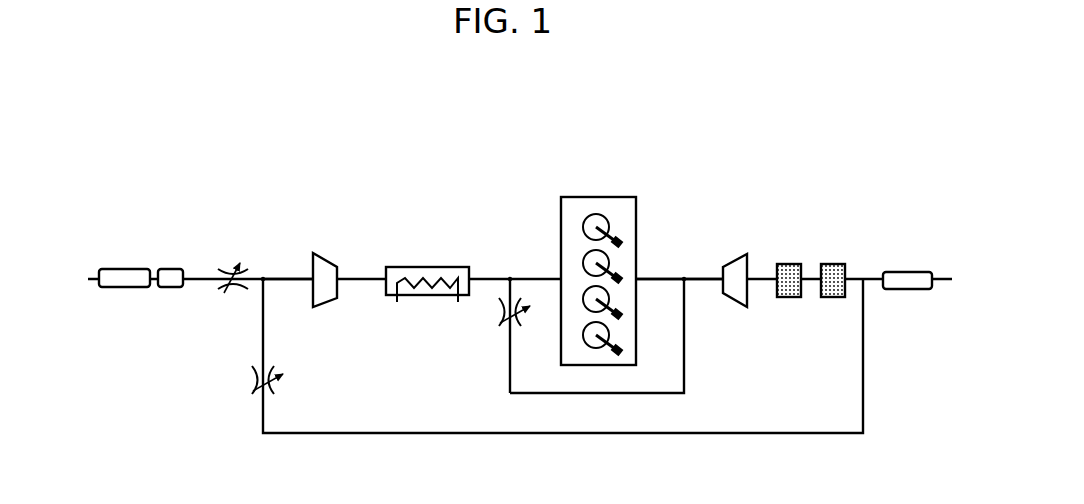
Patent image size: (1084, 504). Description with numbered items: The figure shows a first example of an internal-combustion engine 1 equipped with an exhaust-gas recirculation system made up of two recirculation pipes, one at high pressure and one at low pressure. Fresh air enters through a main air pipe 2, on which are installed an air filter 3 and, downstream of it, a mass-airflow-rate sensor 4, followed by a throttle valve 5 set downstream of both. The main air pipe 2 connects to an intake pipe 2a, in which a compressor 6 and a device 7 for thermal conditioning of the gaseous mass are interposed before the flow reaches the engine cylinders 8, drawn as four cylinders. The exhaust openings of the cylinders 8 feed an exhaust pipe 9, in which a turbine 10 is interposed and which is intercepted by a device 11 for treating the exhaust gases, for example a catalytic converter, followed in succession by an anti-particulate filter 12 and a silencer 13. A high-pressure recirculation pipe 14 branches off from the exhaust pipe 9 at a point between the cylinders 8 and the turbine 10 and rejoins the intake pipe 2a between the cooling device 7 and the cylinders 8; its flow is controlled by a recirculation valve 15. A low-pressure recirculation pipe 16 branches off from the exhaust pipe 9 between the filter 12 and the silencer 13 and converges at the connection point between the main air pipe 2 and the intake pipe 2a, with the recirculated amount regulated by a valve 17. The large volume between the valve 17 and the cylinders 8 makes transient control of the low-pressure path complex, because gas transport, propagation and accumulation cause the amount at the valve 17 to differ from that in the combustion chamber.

The internal-combustion engine 1 is at (762, 178).
The main air pipe 2 is at (201, 282).
The intake pipe 2a is at (285, 282).
The air filter 3 is at (104, 269).
The mass-airflow-rate sensor 4 is at (161, 269).
The throttle valve 5 is at (225, 272).
The compressor 6 is at (327, 297).
The device for thermal conditioning 7 is at (418, 263).
The engine cylinders 8 is at (636, 232).
The exhaust pipe 9 is at (665, 282).
The turbine 10 is at (727, 296).
The device for treating the exhaust gases 11 is at (790, 298).
The anti-particulate filter 12 is at (833, 298).
The silencer 13 is at (905, 289).
The high-pressure recirculation pipe 14 is at (651, 391).
The recirculation valve 15 is at (528, 304).
The low-pressure recirculation pipe 16 is at (422, 434).
The valve 17 is at (280, 382).